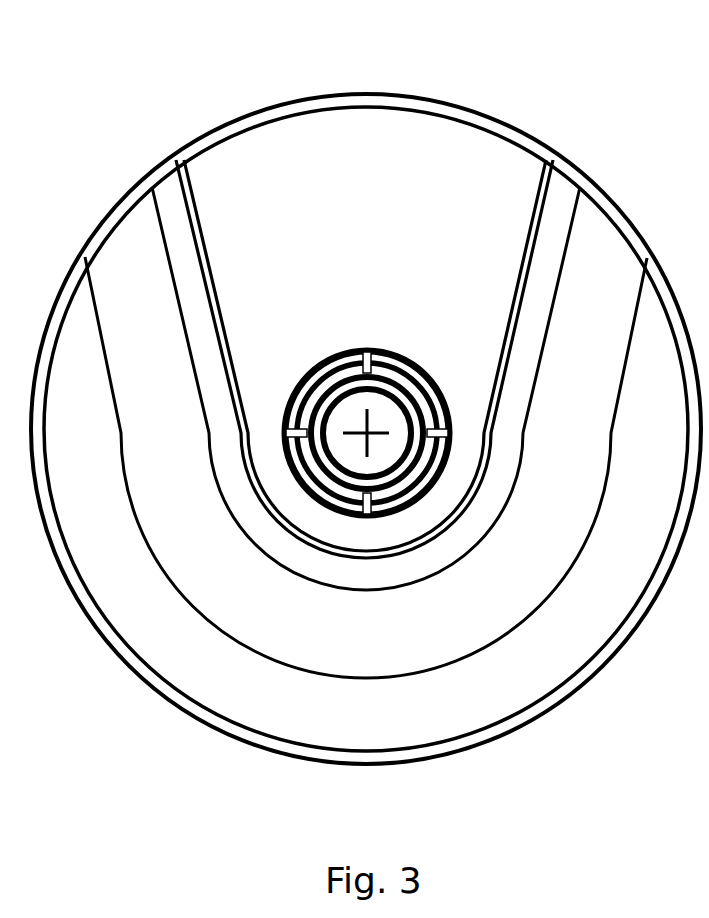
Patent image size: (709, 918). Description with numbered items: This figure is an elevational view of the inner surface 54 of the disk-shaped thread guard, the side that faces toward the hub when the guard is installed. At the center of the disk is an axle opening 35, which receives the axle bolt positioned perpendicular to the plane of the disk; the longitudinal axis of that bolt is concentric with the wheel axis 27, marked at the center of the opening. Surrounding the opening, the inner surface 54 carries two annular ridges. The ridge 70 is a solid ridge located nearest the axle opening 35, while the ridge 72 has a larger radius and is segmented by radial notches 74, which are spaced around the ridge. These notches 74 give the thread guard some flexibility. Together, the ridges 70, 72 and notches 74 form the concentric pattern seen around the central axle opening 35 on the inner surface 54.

The inner surface 54 is at (245, 695).
The annular ridge 72 is at (313, 367).
The annular ridge 70 is at (335, 380).
The axle opening 35 is at (383, 413).
The wheel axis 27 is at (357, 427).
The radial notches 74 is at (368, 522).